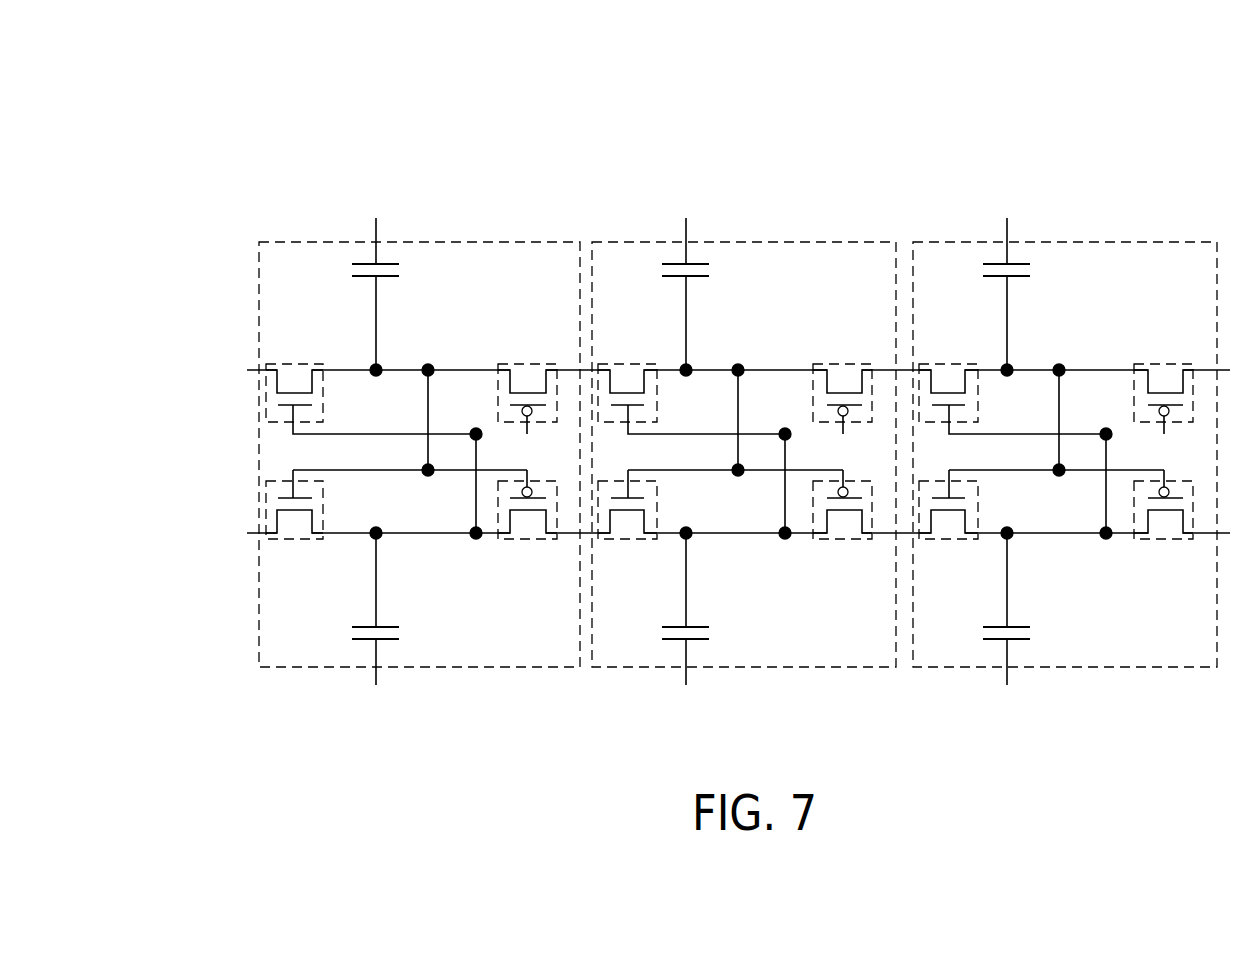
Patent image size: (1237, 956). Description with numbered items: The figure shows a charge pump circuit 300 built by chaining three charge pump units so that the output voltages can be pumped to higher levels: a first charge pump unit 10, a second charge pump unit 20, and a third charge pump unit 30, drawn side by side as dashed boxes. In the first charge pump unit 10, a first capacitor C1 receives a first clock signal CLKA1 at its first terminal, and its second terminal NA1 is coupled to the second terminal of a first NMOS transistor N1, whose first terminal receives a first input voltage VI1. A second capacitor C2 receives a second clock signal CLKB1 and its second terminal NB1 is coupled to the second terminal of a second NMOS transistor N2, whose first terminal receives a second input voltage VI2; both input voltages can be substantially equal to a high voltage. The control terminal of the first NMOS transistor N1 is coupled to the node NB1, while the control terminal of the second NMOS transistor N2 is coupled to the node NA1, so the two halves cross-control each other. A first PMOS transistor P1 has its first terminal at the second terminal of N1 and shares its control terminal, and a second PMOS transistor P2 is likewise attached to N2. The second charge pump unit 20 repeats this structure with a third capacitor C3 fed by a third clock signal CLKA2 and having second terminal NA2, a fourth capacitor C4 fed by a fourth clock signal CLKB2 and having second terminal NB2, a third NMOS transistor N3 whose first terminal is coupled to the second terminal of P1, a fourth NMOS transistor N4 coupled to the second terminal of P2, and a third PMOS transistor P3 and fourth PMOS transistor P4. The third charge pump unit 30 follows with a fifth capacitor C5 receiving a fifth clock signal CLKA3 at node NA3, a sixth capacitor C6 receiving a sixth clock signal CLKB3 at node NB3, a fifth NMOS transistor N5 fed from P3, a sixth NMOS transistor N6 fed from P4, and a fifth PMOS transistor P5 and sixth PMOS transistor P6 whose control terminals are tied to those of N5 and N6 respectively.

The charge pump circuit 300 is at (924, 120).
The first charge pump unit 10 is at (526, 242).
The second charge pump unit 20 is at (856, 242).
The third charge pump unit 30 is at (1177, 242).
The first input voltage VI1 is at (710, 371).
The second input voltage VI2 is at (710, 534).
The first clock signal CLKA1 is at (379, 224).
The third clock signal CLKA2 is at (689, 224).
The fifth clock signal CLKA3 is at (1010, 224).
The second clock signal CLKB1 is at (379, 680).
The fourth clock signal CLKB2 is at (689, 680).
The sixth clock signal CLKB3 is at (1010, 680).
The first capacitor C1 is at (402, 270).
The second capacitor C2 is at (402, 633).
The third capacitor C3 is at (712, 270).
The fourth capacitor C4 is at (712, 633).
The fifth capacitor C5 is at (1033, 270).
The sixth capacitor C6 is at (1033, 633).
The first NMOS transistor N1 is at (322, 363).
The second NMOS transistor N2 is at (318, 541).
The third NMOS transistor N3 is at (650, 363).
The fourth NMOS transistor N4 is at (650, 541).
The fifth NMOS transistor N5 is at (971, 363).
The sixth NMOS transistor N6 is at (971, 541).
The first PMOS transistor P1 is at (552, 363).
The second PMOS transistor P2 is at (552, 540).
The third PMOS transistor P3 is at (868, 363).
The fourth PMOS transistor P4 is at (868, 540).
The fifth PMOS transistor P5 is at (1189, 363).
The sixth PMOS transistor P6 is at (1189, 540).
The second terminal of the first capacitor NA1 is at (380, 367).
The second terminal of the third capacitor NA2 is at (690, 367).
The second terminal of the fifth capacitor NA3 is at (1011, 367).
The second terminal of the second capacitor NB1 is at (379, 536).
The second terminal of the fourth capacitor NB2 is at (689, 536).
The second terminal of the sixth capacitor NB3 is at (1010, 536).